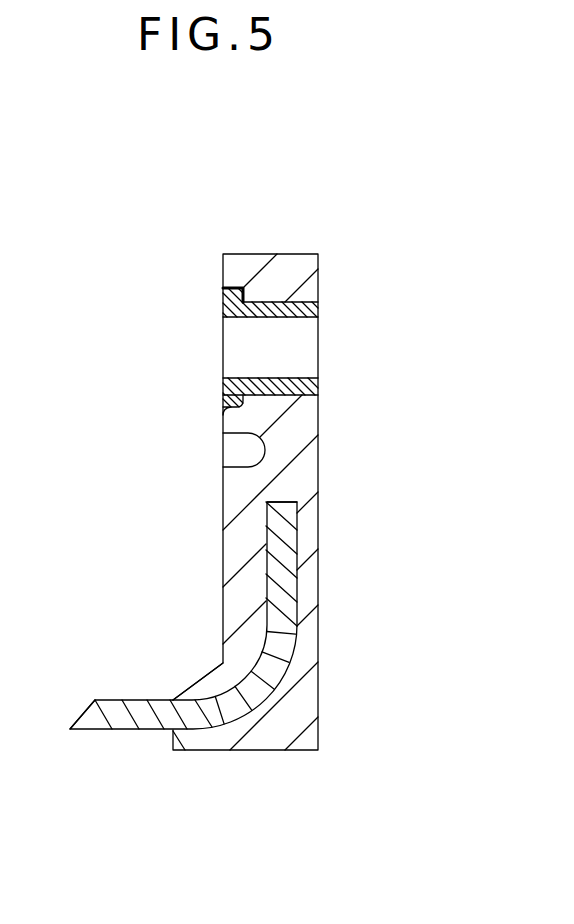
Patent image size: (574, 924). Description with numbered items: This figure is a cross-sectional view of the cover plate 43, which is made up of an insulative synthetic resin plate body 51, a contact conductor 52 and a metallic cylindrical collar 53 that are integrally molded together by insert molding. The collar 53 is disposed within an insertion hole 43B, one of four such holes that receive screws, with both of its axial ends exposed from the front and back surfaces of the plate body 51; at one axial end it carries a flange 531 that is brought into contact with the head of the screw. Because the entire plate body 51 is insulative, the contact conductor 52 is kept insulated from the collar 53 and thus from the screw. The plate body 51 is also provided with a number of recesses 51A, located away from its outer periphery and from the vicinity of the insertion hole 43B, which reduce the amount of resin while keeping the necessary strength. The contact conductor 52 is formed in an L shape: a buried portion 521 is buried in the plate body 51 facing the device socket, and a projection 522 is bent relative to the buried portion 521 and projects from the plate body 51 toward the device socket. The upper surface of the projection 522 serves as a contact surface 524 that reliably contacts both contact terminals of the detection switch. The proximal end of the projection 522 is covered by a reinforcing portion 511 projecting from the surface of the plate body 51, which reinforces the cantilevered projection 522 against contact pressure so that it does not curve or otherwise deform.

The cover plate 43 is at (319, 205).
The insertion hole 43B is at (292, 378).
The collar 53 is at (247, 312).
The flange 531 is at (226, 298).
The plate body 51 is at (232, 512).
The recess 51A is at (245, 439).
The reinforcing portion 511 is at (213, 684).
The contact conductor 52 is at (232, 651).
The buried portion 521 is at (293, 558).
The projection 522 is at (132, 731).
The contact surface 524 is at (133, 700).